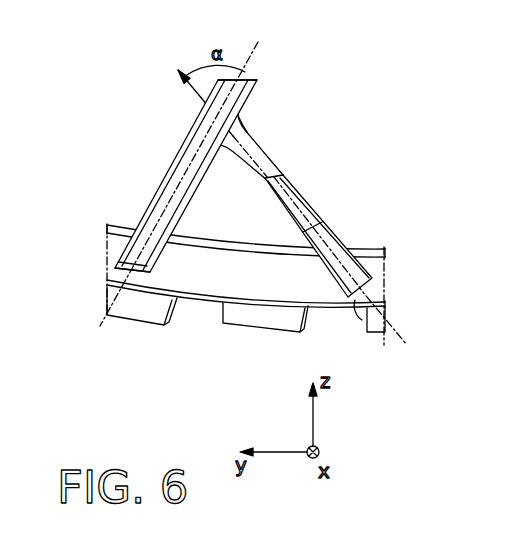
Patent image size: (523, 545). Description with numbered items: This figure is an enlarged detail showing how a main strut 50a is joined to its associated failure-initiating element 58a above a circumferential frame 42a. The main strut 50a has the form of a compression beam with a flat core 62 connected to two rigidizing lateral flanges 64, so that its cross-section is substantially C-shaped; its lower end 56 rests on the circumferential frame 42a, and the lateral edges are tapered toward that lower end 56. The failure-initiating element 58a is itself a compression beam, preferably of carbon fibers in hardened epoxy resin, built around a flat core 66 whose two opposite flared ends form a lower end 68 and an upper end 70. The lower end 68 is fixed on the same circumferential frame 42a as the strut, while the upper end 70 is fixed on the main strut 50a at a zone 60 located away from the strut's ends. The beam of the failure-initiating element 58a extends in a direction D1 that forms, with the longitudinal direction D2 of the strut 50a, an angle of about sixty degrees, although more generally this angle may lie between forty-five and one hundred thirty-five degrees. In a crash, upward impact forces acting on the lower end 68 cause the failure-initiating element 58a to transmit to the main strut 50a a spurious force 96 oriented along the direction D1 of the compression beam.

The circumferential frame 42a is at (197, 299).
The main strut 50a is at (168, 173).
The lower end of the strut 56 is at (122, 256).
The failure-initiating element 58a is at (287, 180).
The zone of the strut 60 is at (165, 184).
The flat core 62 is at (168, 218).
The rigidizing lateral flanges 64 is at (258, 91).
The flat core 66 is at (311, 210).
The lower end 68 is at (362, 310).
The upper end 70 is at (243, 129).
The spurious force 96 is at (207, 108).
The direction of the compression beam D1 is at (173, 66).
The longitudinal direction of the strut D2 is at (258, 50).